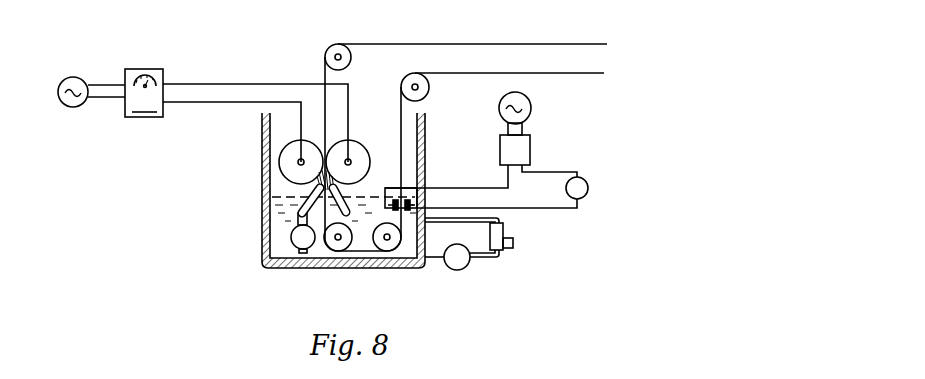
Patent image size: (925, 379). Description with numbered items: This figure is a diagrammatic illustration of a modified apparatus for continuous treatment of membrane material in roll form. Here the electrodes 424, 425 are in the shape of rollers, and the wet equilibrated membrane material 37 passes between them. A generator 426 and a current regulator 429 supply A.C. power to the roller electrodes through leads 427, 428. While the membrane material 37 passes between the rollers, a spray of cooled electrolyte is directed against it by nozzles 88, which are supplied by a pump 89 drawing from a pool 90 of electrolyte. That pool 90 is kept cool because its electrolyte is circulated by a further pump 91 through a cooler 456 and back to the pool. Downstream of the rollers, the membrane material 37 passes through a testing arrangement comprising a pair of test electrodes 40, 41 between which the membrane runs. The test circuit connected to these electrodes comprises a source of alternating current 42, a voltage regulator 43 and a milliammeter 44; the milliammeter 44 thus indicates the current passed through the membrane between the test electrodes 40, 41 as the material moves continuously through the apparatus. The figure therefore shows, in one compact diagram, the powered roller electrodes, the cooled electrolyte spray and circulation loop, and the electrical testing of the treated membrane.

The generator 426 is at (87, 74).
The current regulator 429 is at (144, 93).
The lead 427 is at (252, 83).
The lead 428 is at (235, 103).
The electrode 424 is at (297, 148).
The electrode 425 is at (360, 150).
The membrane material 37 is at (363, 268).
The pool of electrolyte 90 is at (290, 196).
The pump 89 is at (291, 236).
The nozzles 88 is at (350, 187).
The test electrode 40 is at (386, 206).
The test electrode 41 is at (425, 199).
The source of alternating current 42 is at (531, 106).
The voltage regulator 43 is at (524, 149).
The milliammeter 44 is at (589, 188).
The cooler 456 is at (500, 251).
The further pump 91 is at (455, 270).